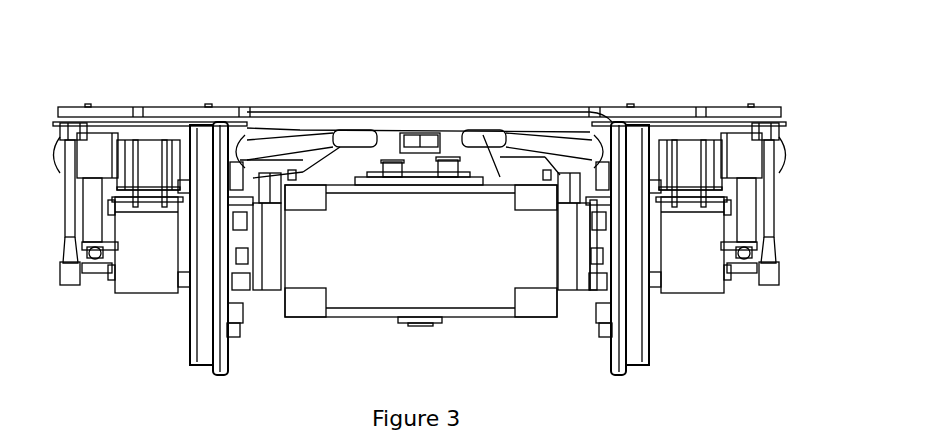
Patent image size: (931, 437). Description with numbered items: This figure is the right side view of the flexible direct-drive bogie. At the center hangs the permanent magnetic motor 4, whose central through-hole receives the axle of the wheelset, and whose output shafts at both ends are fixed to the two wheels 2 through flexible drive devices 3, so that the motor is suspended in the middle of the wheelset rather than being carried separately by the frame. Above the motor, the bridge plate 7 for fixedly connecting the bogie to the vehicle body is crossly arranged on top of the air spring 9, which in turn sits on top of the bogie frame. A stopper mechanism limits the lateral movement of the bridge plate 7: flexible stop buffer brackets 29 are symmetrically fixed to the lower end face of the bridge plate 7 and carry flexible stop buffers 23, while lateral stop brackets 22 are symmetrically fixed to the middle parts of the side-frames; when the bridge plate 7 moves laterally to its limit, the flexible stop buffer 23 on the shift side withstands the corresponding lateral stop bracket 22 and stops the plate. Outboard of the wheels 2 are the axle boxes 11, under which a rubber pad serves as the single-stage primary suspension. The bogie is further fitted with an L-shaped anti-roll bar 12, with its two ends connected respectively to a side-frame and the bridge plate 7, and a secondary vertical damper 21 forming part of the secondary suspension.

The wheel 2 is at (633, 327).
The flexible drive devices 3 is at (580, 302).
The permanent magnetic motor 4 is at (417, 280).
The bridge plate 7 is at (413, 123).
The air spring 9 is at (738, 150).
The axle box 11 is at (688, 268).
The anti-roll bar 12 is at (770, 190).
The secondary vertical damper 21 is at (748, 213).
The lateral stop bracket 22 is at (565, 180).
The flexible stop buffer 23 is at (535, 177).
The flexible stop buffer bracket 29 is at (507, 158).